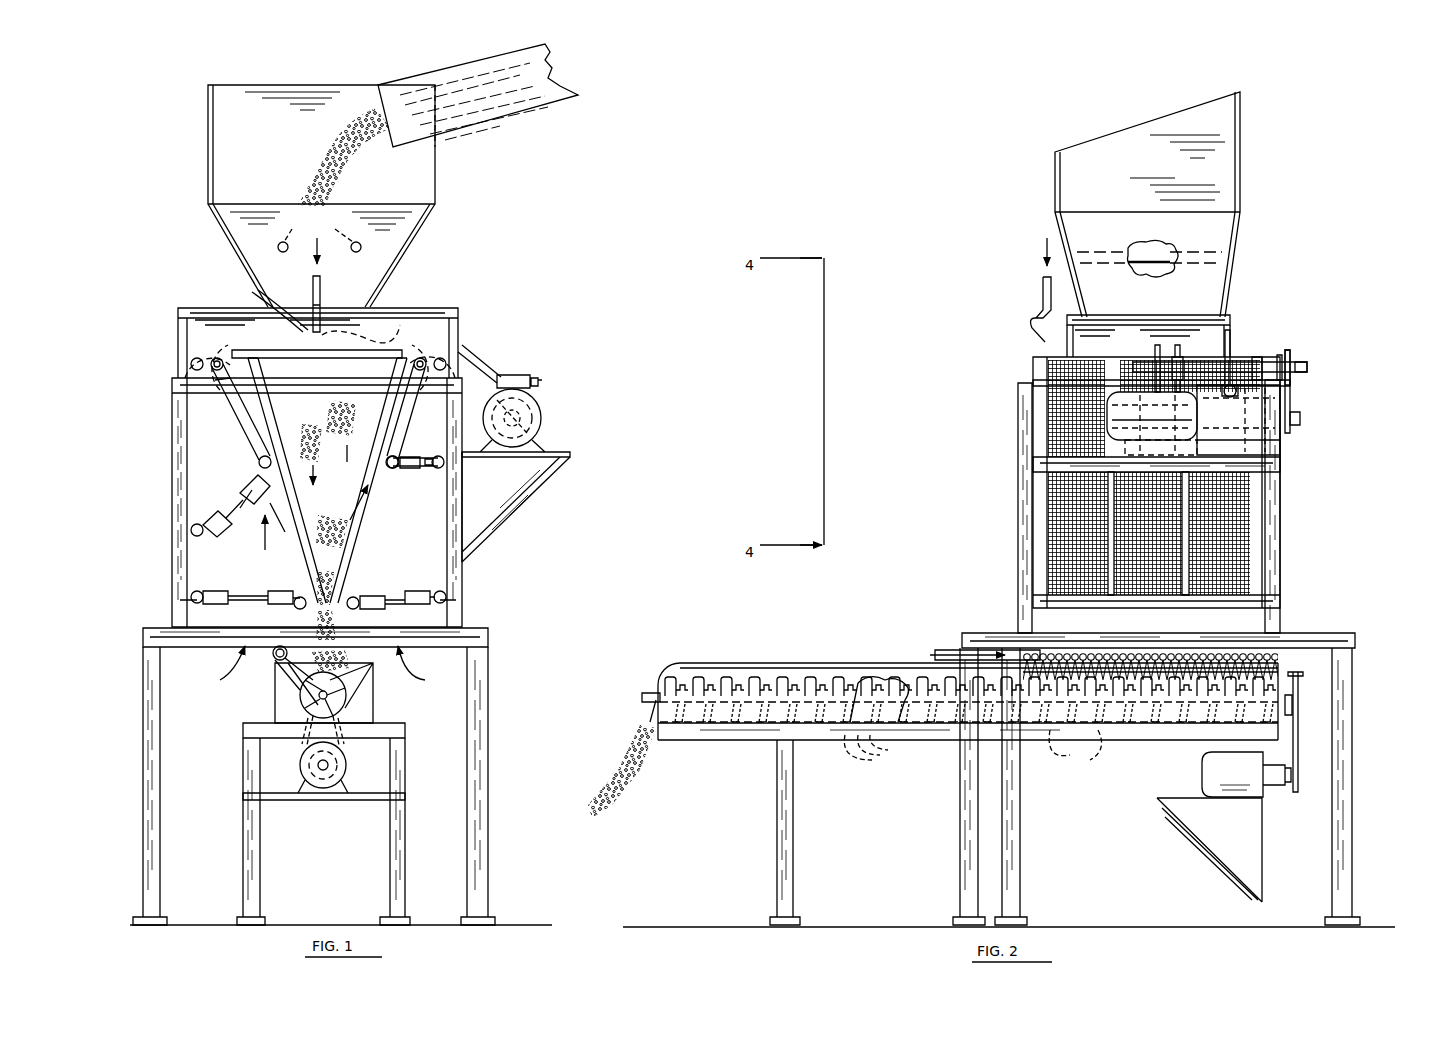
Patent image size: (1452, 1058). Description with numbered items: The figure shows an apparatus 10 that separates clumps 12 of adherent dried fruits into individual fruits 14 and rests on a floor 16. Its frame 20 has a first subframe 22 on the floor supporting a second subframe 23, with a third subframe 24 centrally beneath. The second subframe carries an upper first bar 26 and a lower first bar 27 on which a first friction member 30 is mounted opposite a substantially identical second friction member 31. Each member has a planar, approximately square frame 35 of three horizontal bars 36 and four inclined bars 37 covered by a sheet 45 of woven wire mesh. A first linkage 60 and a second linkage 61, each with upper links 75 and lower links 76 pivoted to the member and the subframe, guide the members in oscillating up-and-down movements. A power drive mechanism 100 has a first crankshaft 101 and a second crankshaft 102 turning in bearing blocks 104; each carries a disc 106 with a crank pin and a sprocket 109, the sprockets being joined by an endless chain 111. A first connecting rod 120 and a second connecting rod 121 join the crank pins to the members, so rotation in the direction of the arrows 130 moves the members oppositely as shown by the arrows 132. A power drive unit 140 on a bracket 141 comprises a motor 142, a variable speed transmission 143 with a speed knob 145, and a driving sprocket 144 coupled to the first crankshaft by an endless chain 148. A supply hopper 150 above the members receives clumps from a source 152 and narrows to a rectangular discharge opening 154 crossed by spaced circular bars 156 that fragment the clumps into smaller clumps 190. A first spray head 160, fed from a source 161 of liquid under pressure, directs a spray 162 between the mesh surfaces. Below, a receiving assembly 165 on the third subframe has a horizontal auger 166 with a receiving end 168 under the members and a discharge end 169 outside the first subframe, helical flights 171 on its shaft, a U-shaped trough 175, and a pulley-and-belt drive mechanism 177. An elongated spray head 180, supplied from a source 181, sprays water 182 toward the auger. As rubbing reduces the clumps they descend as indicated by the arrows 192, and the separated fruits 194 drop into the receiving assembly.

In FIG. 1, the apparatus 10 is at (152, 437).
In FIG. 2, the apparatus 10 is at (878, 188).
In FIG. 1, the clumps 12 is at (322, 151).
In FIG. 2, the individual fruits 14 is at (622, 816).
In FIG. 1, the floor 16 is at (463, 924).
In FIG. 2, the floor 16 is at (826, 926).
In FIG. 1, the frame 20 is at (486, 622).
In FIG. 2, the frame 20 is at (1005, 628).
In FIG. 1, the first subframe 22 is at (143, 715).
In FIG. 2, the first subframe 22 is at (1348, 636).
In FIG. 1, the second subframe 23 is at (172, 472).
In FIG. 2, the second subframe 23 is at (1018, 400).
In FIG. 1, the third subframe 24 is at (245, 780).
In FIG. 2, the third subframe 24 is at (1028, 745).
In FIG. 2, the upper first support or bar 26 is at (1256, 505).
In FIG. 2, the lower first support or bar 27 is at (1245, 668).
In FIG. 1, the first friction member 30 is at (364, 568).
In FIG. 2, the first friction member 30 is at (1265, 517).
In FIG. 1, the second friction member 31 is at (288, 573).
In FIG. 2, the frame 35 is at (1045, 515).
In FIG. 2, the horizontal bars 36 is at (1102, 362).
In FIG. 2, the inclined bars 37 is at (1110, 592).
In FIG. 2, the sheet of woven wire mesh material 45 is at (1240, 550).
In FIG. 1, the first linkage 60 is at (424, 663).
In FIG. 1, the second linkage 61 is at (220, 663).
In FIG. 1, the upper links 75 is at (238, 486).
In FIG. 1, the lower links 76 is at (435, 610).
In FIG. 1, the power drive mechanism 100 is at (602, 416).
In FIG. 2, the power drive mechanism 100 is at (1306, 412).
In FIG. 1, the first crankshaft 101 is at (443, 362).
In FIG. 2, the first crankshaft 101 is at (1232, 375).
In FIG. 1, the second crankshaft 102 is at (193, 362).
In FIG. 2, the bearing blocks 104 is at (1245, 355).
In FIG. 2, the disc 106 is at (1178, 345).
In FIG. 2, the sprockets 109 is at (1308, 366).
In FIG. 1, the endless chain 111 is at (300, 348).
In FIG. 1, the first connecting rod 120 is at (406, 400).
In FIG. 2, the first connecting rod 120 is at (1158, 344).
In FIG. 1, the second connecting rod 121 is at (262, 437).
In FIG. 1, the arrows 130 is at (213, 330).
In FIG. 1, the arrows 132 is at (276, 522).
In FIG. 1, the power drive unit 140 is at (546, 430).
In FIG. 2, the power drive unit 140 is at (1286, 450).
In FIG. 1, the bracket 141 is at (515, 505).
In FIG. 2, the bracket 141 is at (1033, 462).
In FIG. 2, the motor 142 is at (1125, 425).
In FIG. 2, the variable speed transmission 143 is at (1286, 434).
In FIG. 1, the driving sprocket 144 is at (541, 406).
In FIG. 1, the knob 145 is at (541, 381).
In FIG. 2, the knob 145 is at (1258, 357).
In FIG. 1, the endless chain 148 is at (482, 372).
In FIG. 2, the endless chain 148 is at (1292, 400).
In FIG. 1, the supply hopper 150 is at (206, 141).
In FIG. 2, the supply hopper 150 is at (1246, 168).
In FIG. 1, the source 152 is at (492, 115).
In FIG. 1, the rectangular discharge opening 154 is at (399, 325).
In FIG. 1, the circular bars 156 is at (319, 231).
In FIG. 2, the circular bars 156 is at (1158, 257).
In FIG. 1, the first spray head 160 is at (320, 318).
In FIG. 2, the first spray head 160 is at (1040, 312).
In FIG. 1, the arrow 161 is at (323, 256).
In FIG. 2, the arrow 161 is at (1040, 250).
In FIG. 1, the spray 162 is at (265, 310).
In FIG. 2, the spray 162 is at (1045, 340).
In FIG. 1, the receiving assembly 165 is at (243, 816).
In FIG. 2, the receiving assembly 165 is at (672, 665).
In FIG. 2, the horizontal auger 166 is at (640, 693).
In FIG. 2, the receiving end 168 is at (1272, 683).
In FIG. 2, the discharge end 169 is at (672, 735).
In FIG. 1, the helical flights 171 is at (300, 735).
In FIG. 2, the helical flights 171 is at (892, 735).
In FIG. 1, the U-shaped trough 175 is at (360, 690).
In FIG. 1, the drive mechanism 177 is at (348, 756).
In FIG. 2, the drive mechanism 177 is at (860, 668).
In FIG. 1, the elongated spray head 180 is at (280, 662).
In FIG. 2, the elongated spray head 180 is at (1232, 657).
In FIG. 2, the arrow 181 is at (912, 656).
In FIG. 1, the water spray 182 is at (302, 698).
In FIG. 2, the water spray 182 is at (1278, 673).
In FIG. 1, the smaller clumps 190 is at (268, 416).
In FIG. 1, the arrows 192 is at (320, 482).
In FIG. 1, the substantially separated fruits 194 is at (318, 612).